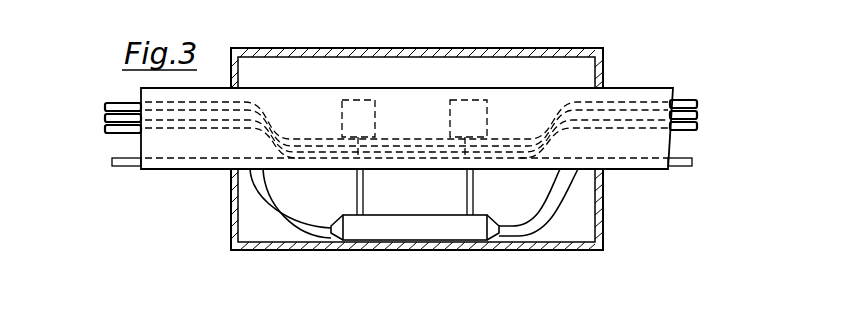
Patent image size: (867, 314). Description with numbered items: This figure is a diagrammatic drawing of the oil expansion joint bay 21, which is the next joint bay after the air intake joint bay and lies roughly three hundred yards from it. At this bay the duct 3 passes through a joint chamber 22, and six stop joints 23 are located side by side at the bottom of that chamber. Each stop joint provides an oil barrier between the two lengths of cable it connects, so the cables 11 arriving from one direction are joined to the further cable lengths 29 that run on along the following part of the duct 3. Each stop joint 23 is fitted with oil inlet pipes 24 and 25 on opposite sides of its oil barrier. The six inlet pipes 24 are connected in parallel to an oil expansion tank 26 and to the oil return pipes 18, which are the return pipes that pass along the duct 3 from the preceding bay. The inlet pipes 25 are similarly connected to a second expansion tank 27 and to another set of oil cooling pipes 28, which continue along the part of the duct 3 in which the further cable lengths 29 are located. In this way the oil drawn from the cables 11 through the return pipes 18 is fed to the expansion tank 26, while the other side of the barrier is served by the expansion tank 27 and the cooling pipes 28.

The duct 3 is at (190, 88).
The cables 11 is at (128, 165).
The return pipes 18 is at (105, 106).
The oil expansion joint bay 21 is at (306, 257).
The joint chamber 22 is at (525, 47).
The stop joints 23 is at (458, 226).
The oil inlet pipes 24 is at (357, 188).
The oil inlet pipes 25 is at (473, 186).
The oil expansion tank 26 is at (376, 118).
The expansion tank 27 is at (487, 113).
The oil cooling pipes 28 is at (698, 125).
The cable lengths 29 is at (680, 160).